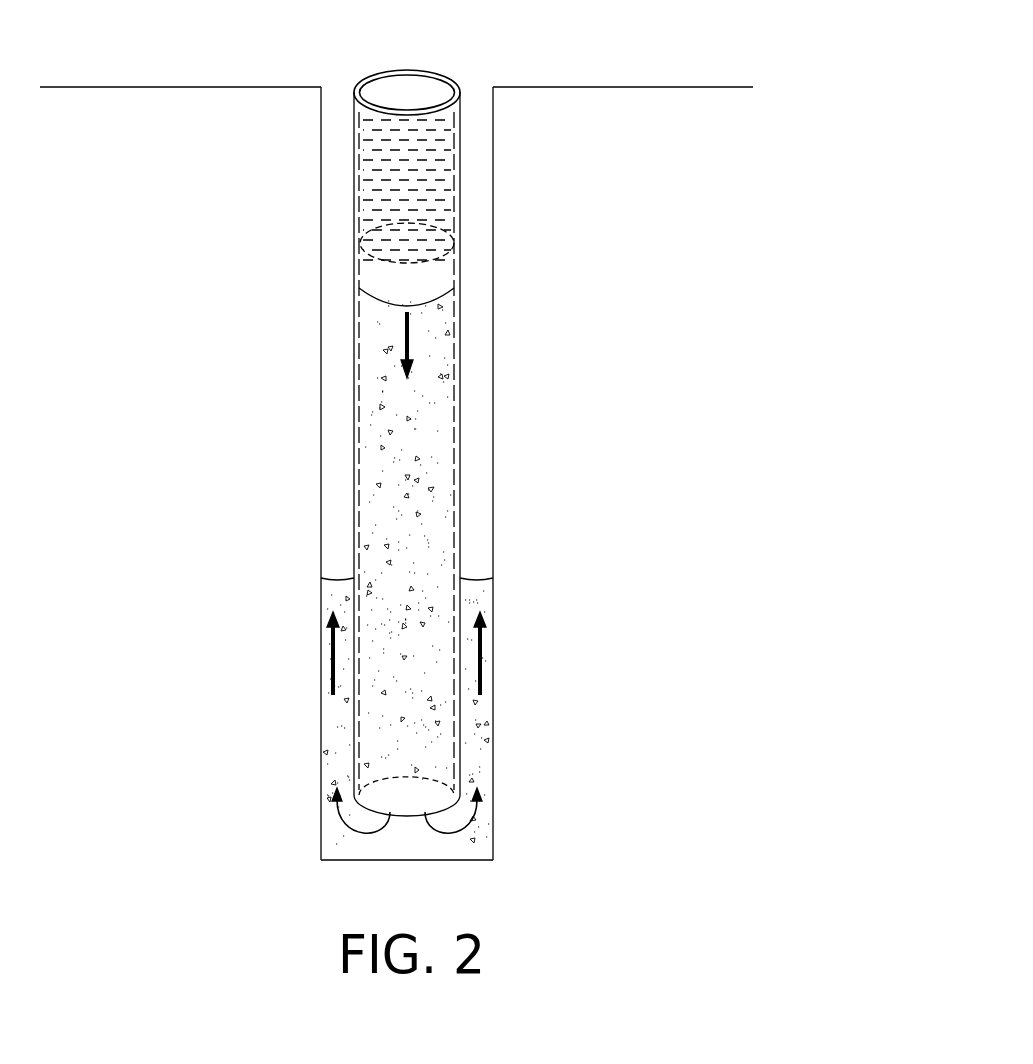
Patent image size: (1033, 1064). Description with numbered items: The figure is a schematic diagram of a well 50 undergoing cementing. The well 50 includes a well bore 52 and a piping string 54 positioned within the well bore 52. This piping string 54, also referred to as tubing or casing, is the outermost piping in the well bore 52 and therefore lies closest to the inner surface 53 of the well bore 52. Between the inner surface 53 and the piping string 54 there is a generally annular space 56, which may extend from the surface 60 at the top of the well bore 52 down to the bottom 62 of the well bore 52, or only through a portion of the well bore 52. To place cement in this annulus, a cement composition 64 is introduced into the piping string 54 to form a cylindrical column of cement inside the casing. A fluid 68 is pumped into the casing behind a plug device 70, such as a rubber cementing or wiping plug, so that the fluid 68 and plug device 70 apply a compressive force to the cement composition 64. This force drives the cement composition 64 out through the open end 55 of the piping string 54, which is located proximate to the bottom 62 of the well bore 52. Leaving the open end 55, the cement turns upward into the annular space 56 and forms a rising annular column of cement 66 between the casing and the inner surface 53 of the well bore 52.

The well 50 is at (600, 690).
The well bore 52 is at (320, 520).
The inner surface 53 is at (493, 356).
The piping string 54 is at (460, 440).
The open end 55 is at (452, 805).
The annular space 56 is at (478, 233).
The surface 60 is at (560, 87).
The bottom 62 is at (425, 860).
The cement composition 64 is at (365, 420).
The rising annular column of cement 66 is at (475, 578).
The fluid 68 is at (375, 163).
The plug device 70 is at (370, 255).